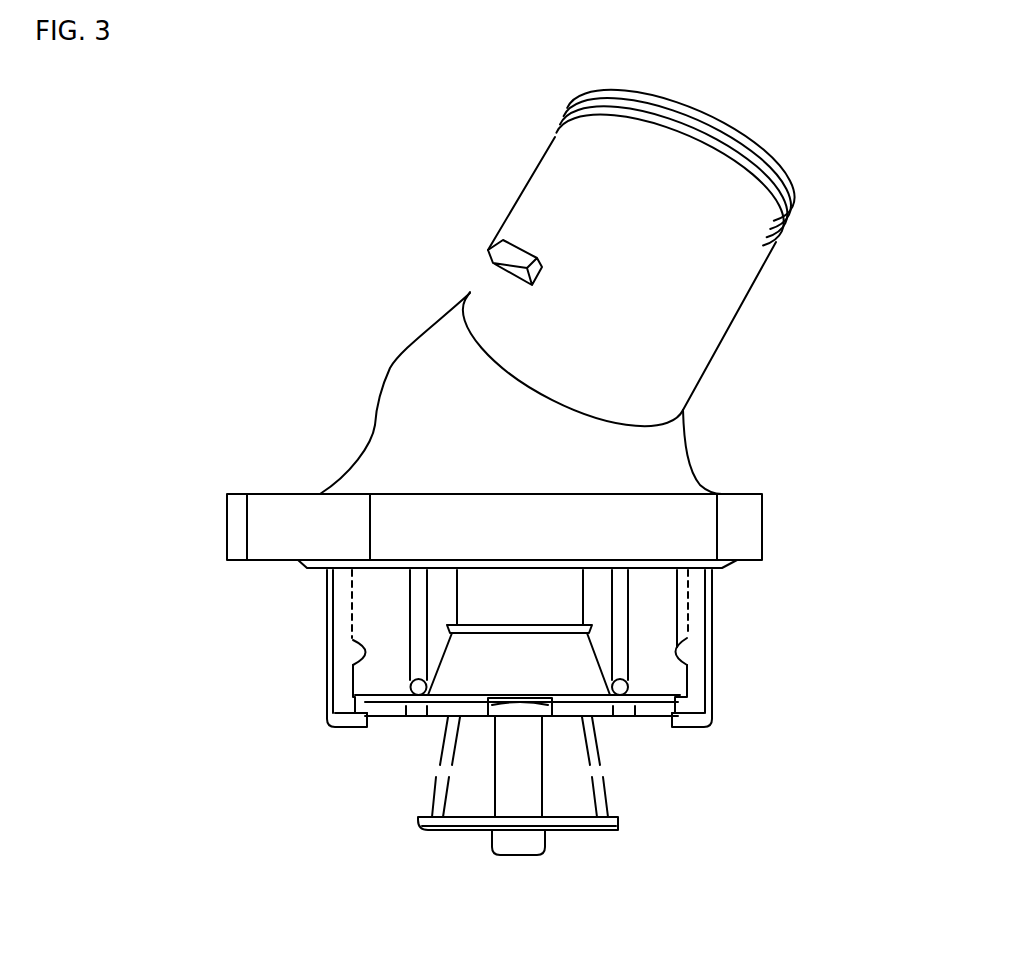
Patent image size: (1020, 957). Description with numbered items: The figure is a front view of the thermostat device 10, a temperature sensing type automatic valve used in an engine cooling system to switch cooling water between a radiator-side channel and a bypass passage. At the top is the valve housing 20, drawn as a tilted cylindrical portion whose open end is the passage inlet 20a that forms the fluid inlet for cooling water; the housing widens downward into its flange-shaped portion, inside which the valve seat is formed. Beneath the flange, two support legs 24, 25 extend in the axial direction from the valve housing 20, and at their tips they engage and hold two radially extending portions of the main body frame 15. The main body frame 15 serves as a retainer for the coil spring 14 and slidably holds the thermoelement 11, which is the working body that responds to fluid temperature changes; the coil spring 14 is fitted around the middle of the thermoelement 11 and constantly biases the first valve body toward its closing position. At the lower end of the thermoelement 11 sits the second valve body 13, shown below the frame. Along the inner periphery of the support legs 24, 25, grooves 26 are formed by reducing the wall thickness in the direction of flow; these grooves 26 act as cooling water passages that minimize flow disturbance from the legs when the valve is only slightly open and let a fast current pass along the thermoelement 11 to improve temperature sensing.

The thermostat device 10 is at (213, 191).
The thermoelement 11 is at (457, 607).
The second valve body 13 is at (572, 837).
The coil spring 14 is at (620, 605).
The main body frame 15 is at (623, 717).
The valve housing 20 is at (383, 397).
The passage inlet 20a is at (783, 170).
The support leg 24 is at (327, 722).
The support leg 25 is at (693, 710).
The groove 26 is at (360, 668).